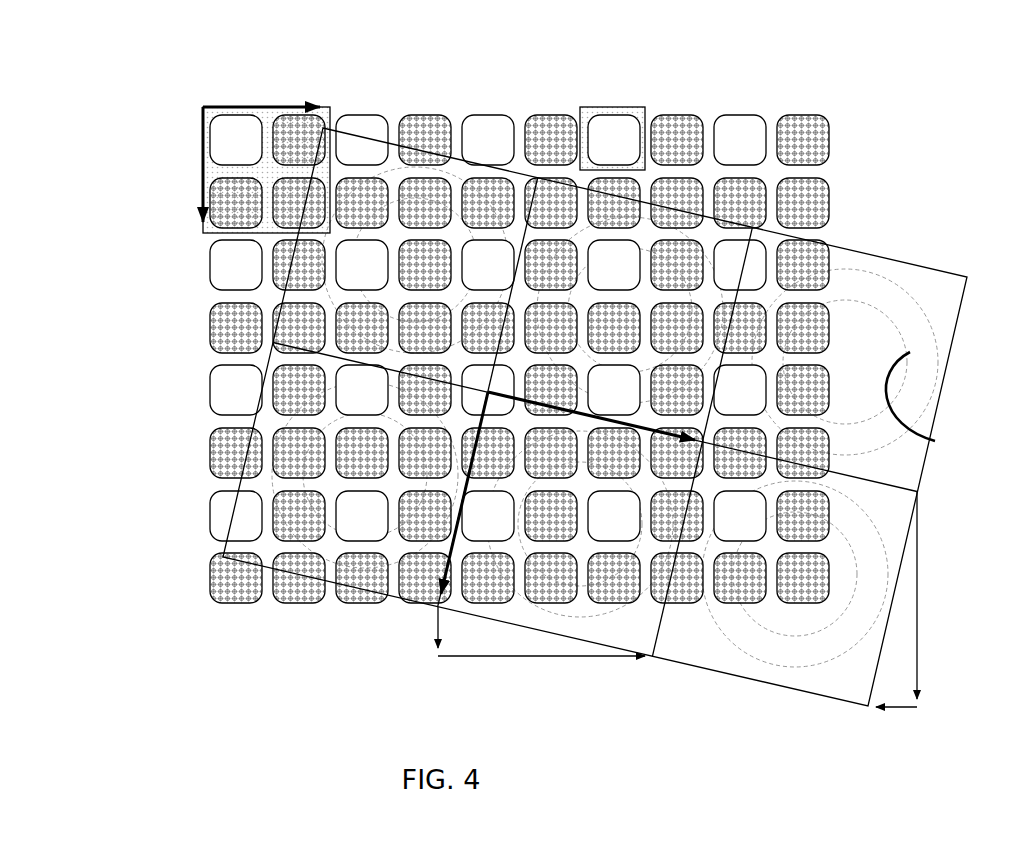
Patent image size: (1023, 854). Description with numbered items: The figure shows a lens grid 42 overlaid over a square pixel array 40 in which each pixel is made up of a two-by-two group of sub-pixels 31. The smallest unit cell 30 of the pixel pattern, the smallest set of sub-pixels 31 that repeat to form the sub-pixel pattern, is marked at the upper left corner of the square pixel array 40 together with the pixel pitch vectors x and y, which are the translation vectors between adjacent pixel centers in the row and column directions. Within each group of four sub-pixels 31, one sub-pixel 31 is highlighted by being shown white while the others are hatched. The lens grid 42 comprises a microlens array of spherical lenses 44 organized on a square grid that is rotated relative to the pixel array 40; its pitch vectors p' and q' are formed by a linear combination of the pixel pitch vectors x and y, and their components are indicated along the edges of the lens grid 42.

The smallest unit cell 30 is at (235, 103).
The sub-pixel 31 is at (612, 103).
The square pixel array 40 is at (801, 111).
The lens grid 42 is at (927, 262).
The spherical lens 44 is at (935, 441).